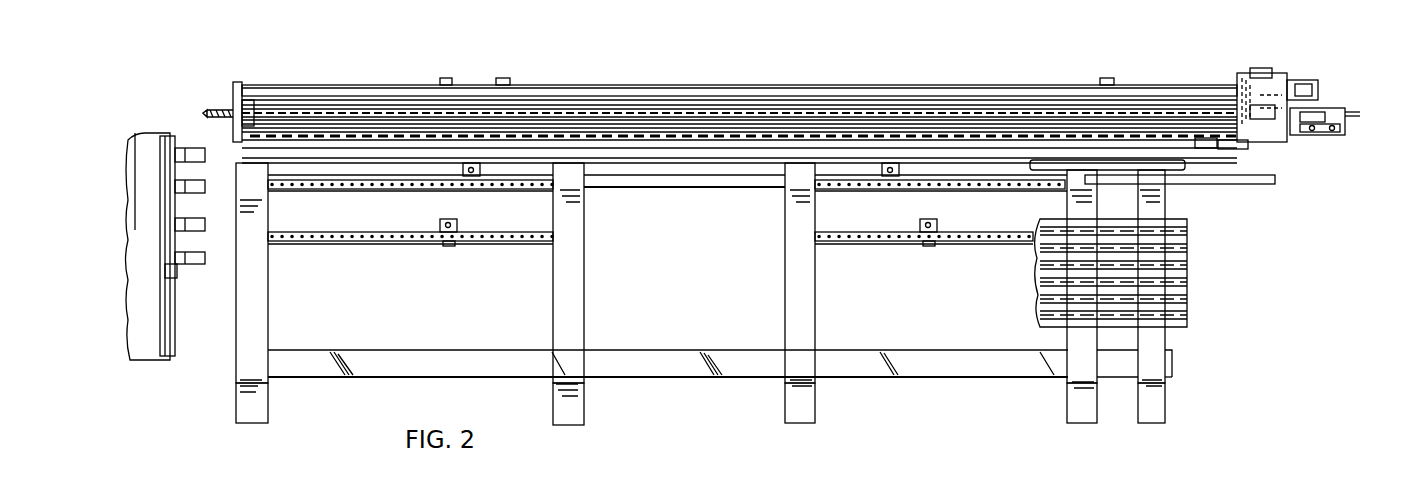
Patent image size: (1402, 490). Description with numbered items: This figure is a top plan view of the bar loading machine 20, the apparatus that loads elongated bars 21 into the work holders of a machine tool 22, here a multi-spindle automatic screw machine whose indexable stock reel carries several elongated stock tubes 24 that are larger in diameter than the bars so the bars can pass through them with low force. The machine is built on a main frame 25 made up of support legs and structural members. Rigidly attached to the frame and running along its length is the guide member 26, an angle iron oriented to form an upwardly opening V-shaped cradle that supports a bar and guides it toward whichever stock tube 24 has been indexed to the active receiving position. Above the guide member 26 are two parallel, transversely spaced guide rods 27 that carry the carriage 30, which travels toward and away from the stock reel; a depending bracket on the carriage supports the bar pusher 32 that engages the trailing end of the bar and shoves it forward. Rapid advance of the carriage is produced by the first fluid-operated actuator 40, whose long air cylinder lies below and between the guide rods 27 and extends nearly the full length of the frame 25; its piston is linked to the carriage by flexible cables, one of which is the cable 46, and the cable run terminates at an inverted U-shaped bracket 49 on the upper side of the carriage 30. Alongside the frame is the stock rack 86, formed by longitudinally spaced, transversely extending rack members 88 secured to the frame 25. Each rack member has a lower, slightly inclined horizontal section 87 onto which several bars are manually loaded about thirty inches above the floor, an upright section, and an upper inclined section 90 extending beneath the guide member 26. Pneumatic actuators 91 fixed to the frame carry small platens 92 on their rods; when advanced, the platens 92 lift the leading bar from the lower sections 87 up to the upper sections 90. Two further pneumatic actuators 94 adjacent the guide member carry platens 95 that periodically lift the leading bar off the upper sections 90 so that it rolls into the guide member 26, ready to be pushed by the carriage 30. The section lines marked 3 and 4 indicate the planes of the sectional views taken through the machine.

The bar loading machine 20 is at (977, 68).
The elongated bars 21 is at (1115, 140).
The machine tool 22 is at (147, 128).
The stock tubes 24 is at (205, 258).
The frame 25 is at (700, 365).
The guide member 26 is at (985, 158).
The guide rods 27 is at (803, 128).
The carriage 30 is at (1278, 82).
The bar pusher 32 is at (1205, 140).
The first actuator 40 is at (860, 102).
The cable 46 is at (742, 110).
The U-shaped bracket 49 is at (1275, 118).
The stock rack 86 is at (832, 312).
The horizontal sections 87 is at (568, 303).
The rack members 88 is at (572, 398).
The upper sections 90 is at (572, 180).
The pneumatic actuators 91 is at (477, 243).
The platens 92 is at (445, 233).
The pneumatic actuators 94 is at (455, 173).
The platens 95 is at (472, 178).
The section line 3- 3 is at (350, 445).
The section line 4- 4 is at (1385, 442).